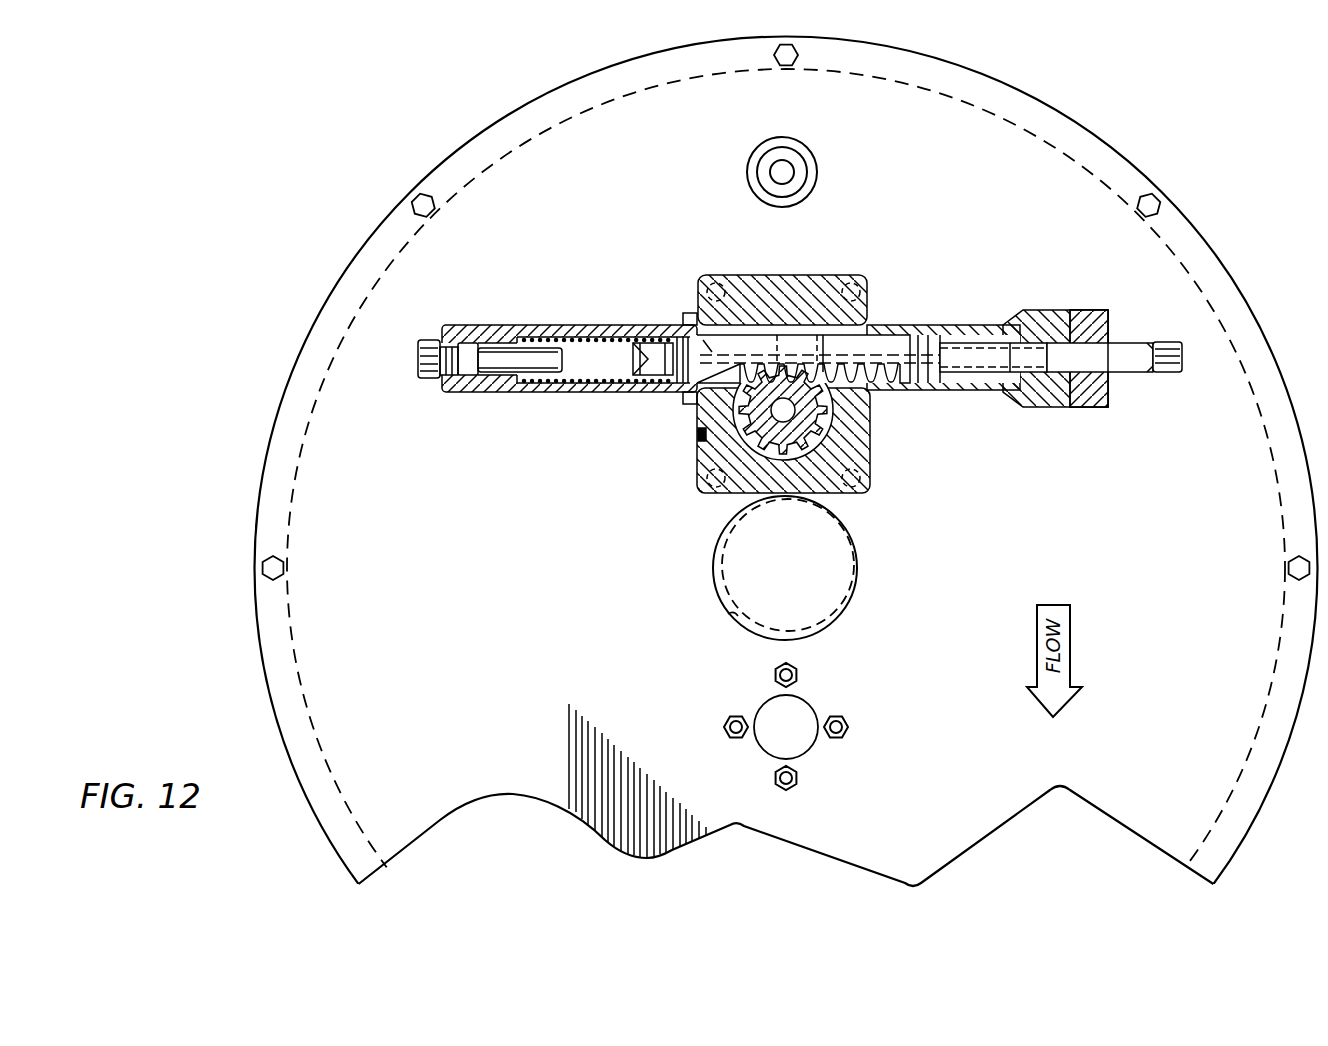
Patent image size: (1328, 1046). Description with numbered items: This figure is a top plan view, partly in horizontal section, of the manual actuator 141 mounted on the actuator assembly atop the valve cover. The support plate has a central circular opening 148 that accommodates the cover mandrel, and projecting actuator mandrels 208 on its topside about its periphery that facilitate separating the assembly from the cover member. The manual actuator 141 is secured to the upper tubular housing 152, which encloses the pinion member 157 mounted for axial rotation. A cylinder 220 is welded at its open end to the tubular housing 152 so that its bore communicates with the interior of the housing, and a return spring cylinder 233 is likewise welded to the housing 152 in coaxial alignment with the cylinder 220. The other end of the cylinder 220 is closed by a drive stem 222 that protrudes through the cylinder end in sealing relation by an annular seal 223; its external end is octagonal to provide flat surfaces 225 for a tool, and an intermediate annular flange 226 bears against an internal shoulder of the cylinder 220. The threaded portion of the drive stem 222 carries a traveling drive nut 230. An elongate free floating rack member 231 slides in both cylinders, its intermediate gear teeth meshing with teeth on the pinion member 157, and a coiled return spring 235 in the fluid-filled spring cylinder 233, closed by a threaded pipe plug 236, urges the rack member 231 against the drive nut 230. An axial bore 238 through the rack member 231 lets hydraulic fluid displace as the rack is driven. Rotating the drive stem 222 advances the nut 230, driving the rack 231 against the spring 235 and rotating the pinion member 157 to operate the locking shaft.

The manual actuator 141 is at (598, 318).
The circular opening 148 is at (728, 620).
The upper tubular housing 152 is at (713, 298).
The pinion member 157 is at (818, 424).
The actuator mandrel 208 is at (812, 153).
The cylinder 220 is at (983, 393).
The drive stem 222 is at (1135, 373).
The annular seal 223 is at (1118, 325).
The flat surfaces 225 is at (1167, 371).
The annular flange 226 is at (1088, 318).
The traveling drive nut 230 is at (997, 333).
The rack member 231 is at (862, 345).
The return spring cylinder 233 is at (627, 390).
The coiled return spring 235 is at (565, 338).
The threaded pipe plug 236 is at (428, 380).
The axial bore 238 is at (679, 324).